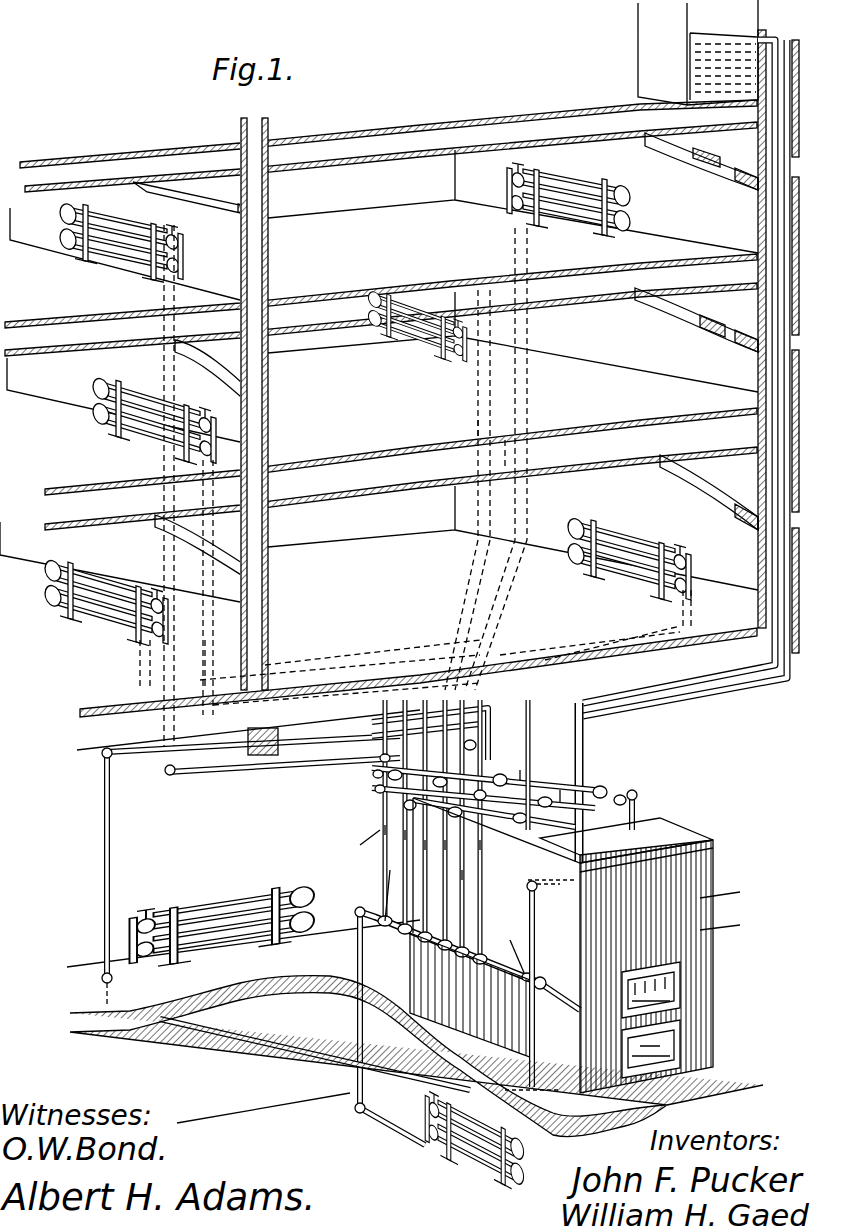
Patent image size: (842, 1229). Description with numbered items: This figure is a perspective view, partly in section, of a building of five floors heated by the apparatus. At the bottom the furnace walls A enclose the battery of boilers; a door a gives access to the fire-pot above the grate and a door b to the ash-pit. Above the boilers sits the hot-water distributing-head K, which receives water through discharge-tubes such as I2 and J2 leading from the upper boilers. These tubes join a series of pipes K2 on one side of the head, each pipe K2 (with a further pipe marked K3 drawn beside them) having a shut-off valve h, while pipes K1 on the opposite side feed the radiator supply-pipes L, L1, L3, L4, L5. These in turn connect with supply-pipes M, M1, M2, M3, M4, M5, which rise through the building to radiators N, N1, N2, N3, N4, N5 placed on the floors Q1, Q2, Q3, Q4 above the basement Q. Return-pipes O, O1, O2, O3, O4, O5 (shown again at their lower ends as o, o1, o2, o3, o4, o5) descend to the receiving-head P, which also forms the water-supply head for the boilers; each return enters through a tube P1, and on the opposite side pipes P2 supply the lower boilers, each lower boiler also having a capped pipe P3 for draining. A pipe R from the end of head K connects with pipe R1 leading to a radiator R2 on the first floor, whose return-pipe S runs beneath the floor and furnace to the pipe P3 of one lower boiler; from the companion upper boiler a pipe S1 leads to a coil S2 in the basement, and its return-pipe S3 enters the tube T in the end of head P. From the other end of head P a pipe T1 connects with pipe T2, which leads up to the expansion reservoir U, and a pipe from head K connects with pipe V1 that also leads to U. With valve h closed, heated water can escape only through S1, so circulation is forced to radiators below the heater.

The expansion reservoir U is at (698, 52).
The radiator N is at (118, 206).
The radiator N1 is at (555, 165).
The radiator N2 is at (417, 327).
The radiator N3 is at (125, 380).
The radiator N4 is at (605, 522).
The radiator N5 is at (72, 565).
The basement floor Q is at (263, 1121).
The floor Q1 is at (243, 838).
The floor Q2 is at (379, 547).
The floor Q3 is at (382, 367).
The floor Q4 is at (384, 225).
The supply-pipe M is at (275, 785).
The supply-pipe M1 is at (506, 459).
The supply-pipe M2 is at (474, 490).
The supply-pipe M3 is at (341, 587).
The supply-pipe M4 is at (633, 628).
The supply-pipe M5 is at (310, 661).
The return-pipe O is at (295, 748).
The return-pipe O1 is at (498, 455).
The return-pipe O2 is at (466, 430).
The return-pipe O3 is at (201, 647).
The return-pipe O4 is at (590, 636).
The return-pipe O5 is at (340, 667).
The pipe V1 is at (772, 383).
The pipe T2 is at (688, 484).
The discharge-tube I2 is at (434, 730).
The supply-pipe L is at (441, 723).
The supply-pipe L1 is at (487, 739).
The supply-pipe L3 is at (380, 760).
The supply-pipe L4 is at (372, 775).
The supply-pipe L5 is at (375, 790).
The distributing-head K is at (489, 773).
The pipe K1 is at (400, 790).
The pipe K2 is at (628, 770).
The valve K3 is at (519, 761).
The shut-off valve h is at (555, 757).
The supply-tube J2 is at (640, 797).
The receiving-head P is at (378, 915).
The tube P1 is at (479, 979).
The pipe P2 is at (518, 951).
The pipe P3 is at (733, 921).
The pipe R is at (401, 873).
The pipe R1 is at (161, 876).
The radiator R2 is at (222, 926).
The return-pipe S is at (725, 1010).
The pipe S1 is at (532, 985).
The radiator S2 is at (474, 1143).
The return-pipe S3 is at (358, 1020).
The pipe T is at (725, 862).
The pipe T1 is at (727, 895).
The furnace walls A is at (690, 925).
The door a is at (682, 988).
The door b is at (682, 1045).
The branch pipe o is at (461, 879).
The branch pipe o1 is at (480, 849).
The branch pipe o2 is at (450, 849).
The branch pipe o3 is at (428, 849).
The branch pipe o4 is at (403, 839).
The branch pipe o5 is at (384, 834).